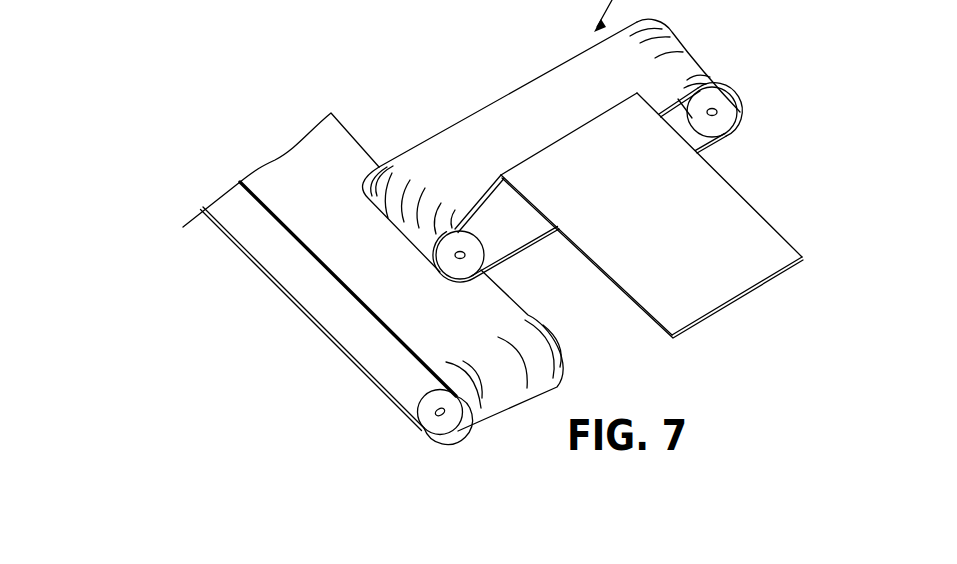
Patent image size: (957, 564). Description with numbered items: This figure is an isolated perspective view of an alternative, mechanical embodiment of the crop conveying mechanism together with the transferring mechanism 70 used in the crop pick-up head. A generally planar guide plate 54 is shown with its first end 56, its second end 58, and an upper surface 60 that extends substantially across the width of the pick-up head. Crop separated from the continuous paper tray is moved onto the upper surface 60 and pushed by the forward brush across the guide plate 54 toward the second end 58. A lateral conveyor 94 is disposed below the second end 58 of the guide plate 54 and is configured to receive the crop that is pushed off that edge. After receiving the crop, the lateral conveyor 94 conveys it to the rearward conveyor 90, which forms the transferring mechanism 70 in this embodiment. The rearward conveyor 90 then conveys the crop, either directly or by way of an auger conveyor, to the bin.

The guide plate 54 is at (702, 164).
The first end 56 is at (803, 254).
The second end 58 is at (633, 95).
The upper surface 60 is at (692, 199).
The transferring mechanism 70 is at (212, 253).
The rearward conveyor 90 is at (367, 257).
The lateral conveyor 94 is at (495, 118).